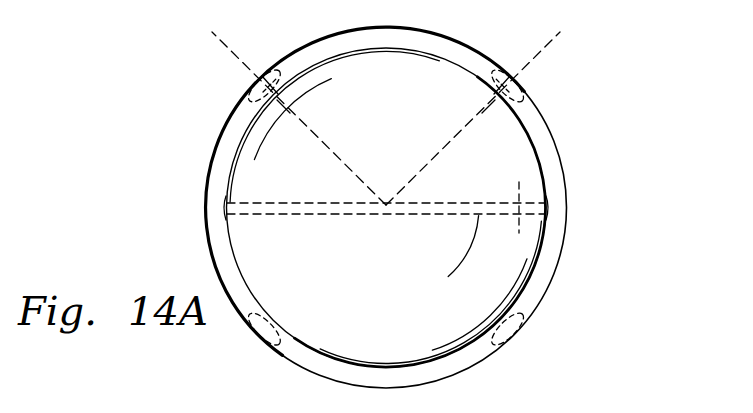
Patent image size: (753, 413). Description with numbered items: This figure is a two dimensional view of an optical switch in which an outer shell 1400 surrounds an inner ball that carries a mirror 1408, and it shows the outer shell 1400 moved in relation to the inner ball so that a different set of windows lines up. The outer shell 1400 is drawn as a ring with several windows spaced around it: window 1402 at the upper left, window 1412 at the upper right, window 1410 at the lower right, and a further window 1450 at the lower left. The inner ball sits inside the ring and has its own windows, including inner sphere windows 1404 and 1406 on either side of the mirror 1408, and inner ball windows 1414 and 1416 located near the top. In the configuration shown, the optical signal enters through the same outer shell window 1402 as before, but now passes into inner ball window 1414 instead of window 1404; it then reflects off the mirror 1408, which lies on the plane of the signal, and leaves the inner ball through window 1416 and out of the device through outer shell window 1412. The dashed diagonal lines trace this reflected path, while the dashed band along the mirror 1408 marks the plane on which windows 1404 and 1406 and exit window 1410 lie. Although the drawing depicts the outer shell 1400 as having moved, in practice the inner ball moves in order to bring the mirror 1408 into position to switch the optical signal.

The outer shell 1400 is at (556, 269).
The outer shell window 1402 is at (250, 89).
The inner sphere window 1404 is at (228, 215).
The inner sphere window 1406 is at (545, 215).
The mirror 1408 is at (332, 216).
The outer shell window 1410 is at (513, 332).
The outer shell window 1412 is at (523, 89).
The inner ball window 1414 is at (275, 85).
The inner ball window 1416 is at (496, 85).
The lower-left edge region 1450 is at (260, 332).